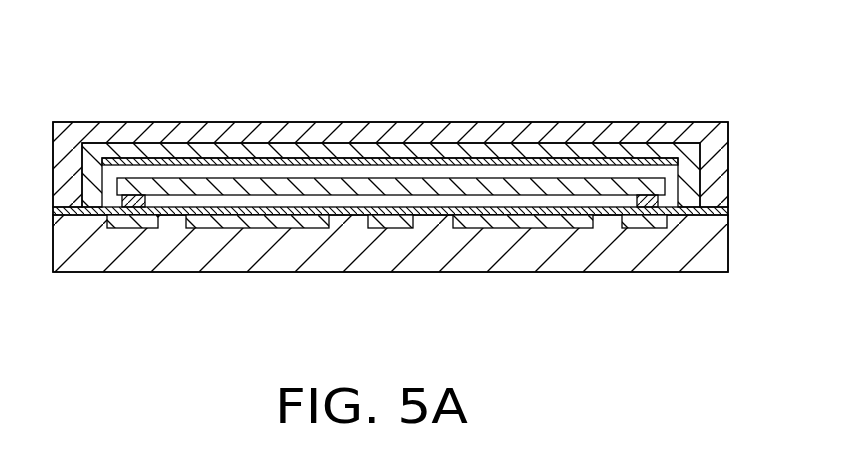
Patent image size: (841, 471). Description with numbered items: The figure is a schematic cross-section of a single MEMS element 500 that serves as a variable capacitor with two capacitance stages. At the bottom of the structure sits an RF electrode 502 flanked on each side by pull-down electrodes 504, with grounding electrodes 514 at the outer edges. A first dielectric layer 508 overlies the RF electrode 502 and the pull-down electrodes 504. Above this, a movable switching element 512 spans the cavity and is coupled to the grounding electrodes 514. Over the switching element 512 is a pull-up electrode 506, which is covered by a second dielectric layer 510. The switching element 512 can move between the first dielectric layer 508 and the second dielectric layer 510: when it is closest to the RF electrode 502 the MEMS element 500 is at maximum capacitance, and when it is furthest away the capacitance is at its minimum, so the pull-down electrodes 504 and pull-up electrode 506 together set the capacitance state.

The MEMS element 500 is at (124, 62).
The RF electrode 502 is at (390, 228).
The pull-down electrodes 504 is at (257, 225).
The pull-up electrode 506 is at (280, 148).
The first dielectric layer 508 is at (423, 208).
The second dielectric layer 510 is at (627, 162).
The switching element 512 is at (183, 185).
The grounding electrodes 514 is at (137, 222).